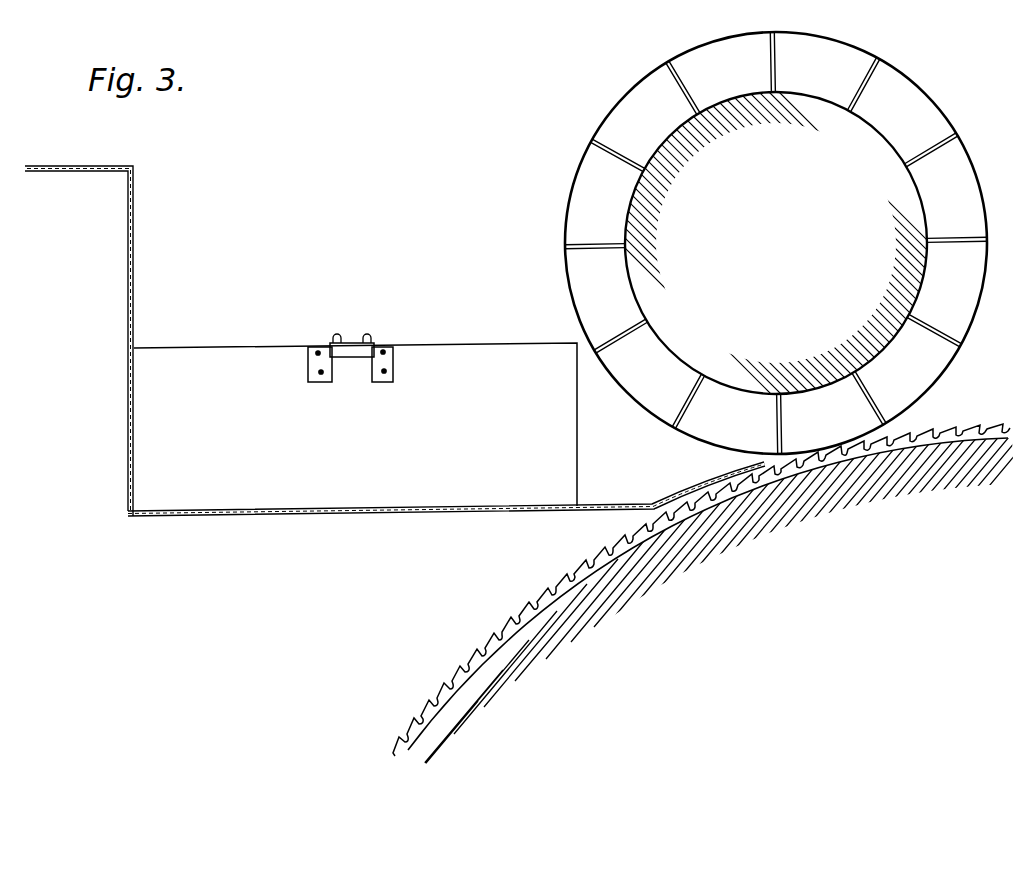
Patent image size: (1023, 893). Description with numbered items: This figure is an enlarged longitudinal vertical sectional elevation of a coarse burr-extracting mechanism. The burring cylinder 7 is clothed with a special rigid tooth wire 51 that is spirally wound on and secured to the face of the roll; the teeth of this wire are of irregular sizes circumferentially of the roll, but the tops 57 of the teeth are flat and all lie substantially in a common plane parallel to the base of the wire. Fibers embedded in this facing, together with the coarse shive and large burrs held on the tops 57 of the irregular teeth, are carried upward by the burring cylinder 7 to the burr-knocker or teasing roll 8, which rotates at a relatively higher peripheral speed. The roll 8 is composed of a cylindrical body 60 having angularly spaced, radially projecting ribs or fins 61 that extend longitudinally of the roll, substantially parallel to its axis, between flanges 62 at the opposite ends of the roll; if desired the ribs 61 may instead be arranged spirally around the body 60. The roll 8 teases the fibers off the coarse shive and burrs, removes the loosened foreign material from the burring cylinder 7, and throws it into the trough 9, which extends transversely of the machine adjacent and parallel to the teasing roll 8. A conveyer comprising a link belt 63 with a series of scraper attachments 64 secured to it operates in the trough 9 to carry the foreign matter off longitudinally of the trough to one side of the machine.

The burring cylinder 7 is at (457, 700).
The roll 8 is at (776, 243).
The trough 9 is at (270, 516).
The rigid tooth wire 51 is at (623, 553).
The tops of the teeth 57 is at (557, 587).
The cylindrical body 60 is at (928, 277).
The ribs or fins 61 is at (921, 326).
The flanges 62 is at (919, 97).
The link belt 63 is at (338, 342).
The scraper attachments 64 is at (176, 355).